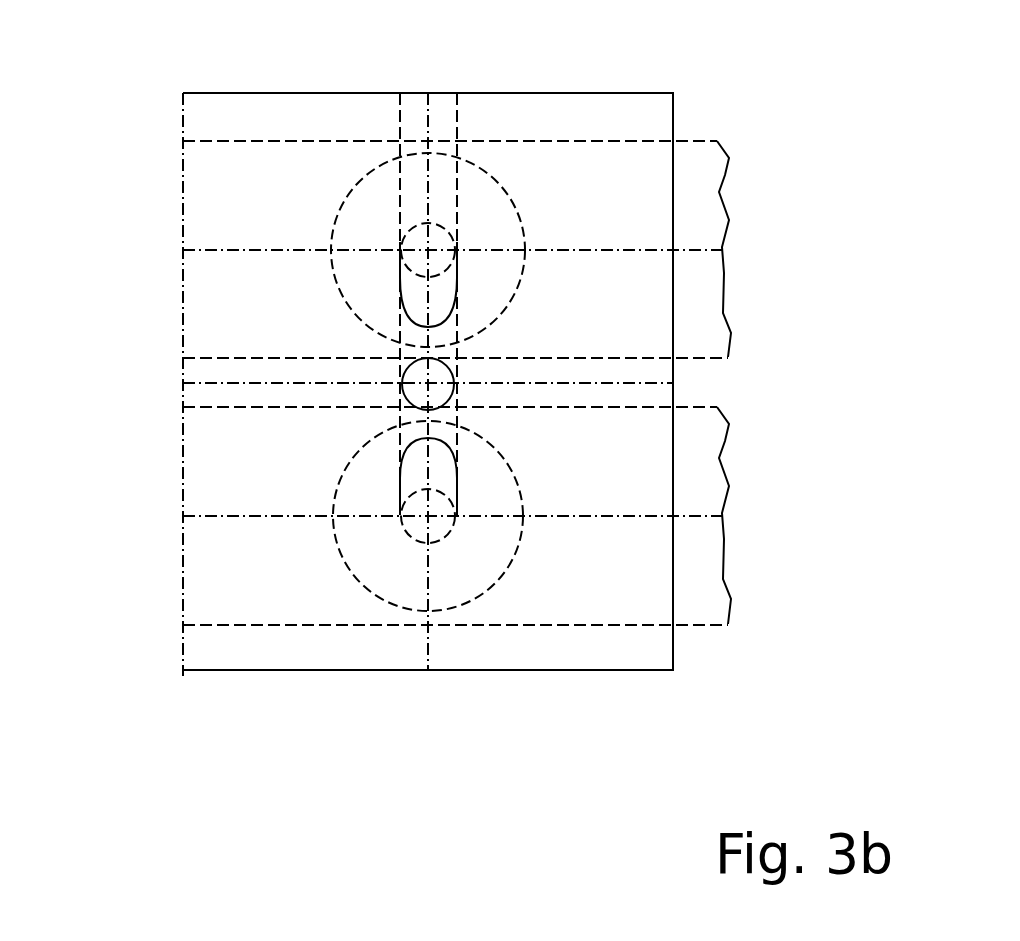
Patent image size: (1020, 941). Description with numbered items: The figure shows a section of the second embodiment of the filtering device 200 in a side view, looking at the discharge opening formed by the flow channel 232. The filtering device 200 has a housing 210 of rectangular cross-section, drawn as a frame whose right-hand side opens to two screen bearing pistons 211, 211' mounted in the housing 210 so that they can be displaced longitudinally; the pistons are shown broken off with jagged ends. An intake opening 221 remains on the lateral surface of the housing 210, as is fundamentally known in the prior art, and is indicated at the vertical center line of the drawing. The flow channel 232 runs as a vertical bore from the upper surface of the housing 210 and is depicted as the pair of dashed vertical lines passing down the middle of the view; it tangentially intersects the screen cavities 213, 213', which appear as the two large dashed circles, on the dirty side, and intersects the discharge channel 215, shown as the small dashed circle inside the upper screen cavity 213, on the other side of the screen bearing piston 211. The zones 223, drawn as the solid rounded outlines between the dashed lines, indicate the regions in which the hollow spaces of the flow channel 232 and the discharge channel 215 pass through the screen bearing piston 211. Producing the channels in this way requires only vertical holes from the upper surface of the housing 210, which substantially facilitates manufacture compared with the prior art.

The filtering device 200 is at (121, 60).
The housing 210 is at (358, 93).
The intake opening 221 is at (428, 84).
The flow channel 232 is at (400, 195).
The discharge channel 215 is at (417, 242).
The screen cavity 213 is at (291, 250).
The zone 223 is at (423, 303).
The screen cavity 213' is at (285, 516).
The screen bearing piston 211 is at (781, 245).
The screen bearing piston 211' is at (787, 515).